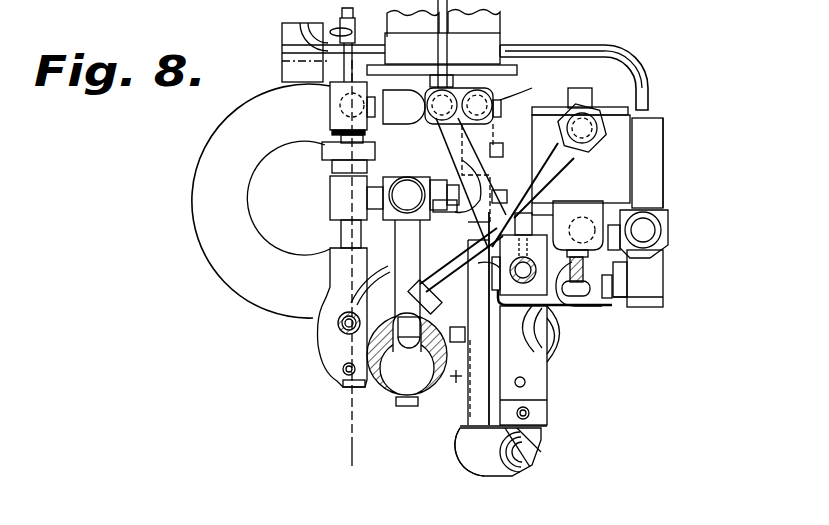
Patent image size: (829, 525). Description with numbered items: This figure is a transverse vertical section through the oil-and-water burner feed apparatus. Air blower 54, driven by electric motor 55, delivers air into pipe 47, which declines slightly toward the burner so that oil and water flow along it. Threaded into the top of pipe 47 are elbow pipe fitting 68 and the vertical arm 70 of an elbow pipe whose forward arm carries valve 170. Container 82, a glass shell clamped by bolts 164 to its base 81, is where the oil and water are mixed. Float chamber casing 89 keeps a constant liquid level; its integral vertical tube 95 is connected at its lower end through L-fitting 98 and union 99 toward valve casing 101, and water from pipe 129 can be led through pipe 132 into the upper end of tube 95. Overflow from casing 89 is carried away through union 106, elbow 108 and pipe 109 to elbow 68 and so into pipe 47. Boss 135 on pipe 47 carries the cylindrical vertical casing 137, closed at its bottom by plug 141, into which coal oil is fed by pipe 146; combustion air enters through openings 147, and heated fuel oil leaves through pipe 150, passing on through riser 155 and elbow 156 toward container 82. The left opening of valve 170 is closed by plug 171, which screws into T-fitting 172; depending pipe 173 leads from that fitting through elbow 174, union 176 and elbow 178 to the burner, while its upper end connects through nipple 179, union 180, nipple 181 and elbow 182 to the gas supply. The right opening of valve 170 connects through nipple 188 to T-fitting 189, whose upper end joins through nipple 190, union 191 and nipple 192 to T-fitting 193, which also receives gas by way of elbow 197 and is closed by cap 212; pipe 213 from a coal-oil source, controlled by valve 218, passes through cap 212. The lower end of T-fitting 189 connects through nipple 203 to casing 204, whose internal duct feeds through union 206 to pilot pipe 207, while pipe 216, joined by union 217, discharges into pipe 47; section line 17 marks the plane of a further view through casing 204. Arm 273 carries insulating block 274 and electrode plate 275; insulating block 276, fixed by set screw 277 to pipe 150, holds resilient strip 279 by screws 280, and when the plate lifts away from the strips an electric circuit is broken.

The section line 17 is at (352, 57).
The pipe 47 is at (398, 402).
The air blower 54 is at (261, 201).
The electric motor 55 is at (288, 198).
The elbow pipe fitting 68 is at (412, 322).
The vertical arm 70 is at (407, 269).
The base 81 is at (442, 49).
The container 82 is at (494, 26).
The float chamber casing 89 is at (625, 129).
The vertical tube 95 is at (660, 152).
The L-fitting 98 is at (648, 232).
The union 99 is at (658, 244).
The valve casing 101 is at (662, 278).
The union 106 is at (561, 175).
The elbow 108 is at (585, 125).
The pipe 109 is at (455, 271).
The pipe 129 is at (300, 23).
The pipe 132 is at (652, 83).
The boss 135 is at (459, 373).
The cylindrical vertical casing 137 is at (550, 330).
The plug 141 is at (535, 412).
The pipe 146 is at (530, 420).
The openings 147 is at (527, 384).
The pipe 150 is at (523, 365).
The riser 155 is at (461, 199).
The elbow 156 is at (455, 133).
The bolts 164 is at (469, 44).
The valve 170 is at (406, 198).
The plug 171 is at (455, 190).
The T-fitting 172 is at (463, 170).
The depending pipe 173 is at (482, 403).
The elbow 174 is at (477, 452).
The union 176 is at (499, 478).
The elbow 178 is at (542, 448).
The nipple 179 is at (506, 183).
The union 180 is at (503, 150).
The nipple 181 is at (503, 130).
The elbow 182 is at (494, 100).
The nipple 188 is at (383, 200).
The T-fitting 189 is at (356, 198).
The nipple 190 is at (332, 168).
The union 191 is at (322, 152).
The nipple 192 is at (332, 132).
The T-fitting 193 is at (332, 105).
The elbow 197 is at (442, 106).
The nipple 203 is at (342, 235).
The casing 204 is at (354, 317).
The union 206 is at (338, 320).
The pipe 207 is at (342, 335).
The cap 212 is at (332, 86).
The pipe 213 is at (282, 68).
The pipe 216 is at (343, 370).
The union 217 is at (351, 374).
The valve 218 is at (282, 46).
The arm 273 is at (547, 305).
The insulating block 274 is at (560, 300).
The electrode plate 275 is at (630, 308).
The insulating block 276 is at (519, 254).
The set screw 277 is at (548, 205).
The resilient metallic strip 279 is at (548, 358).
The screws 280 is at (472, 263).